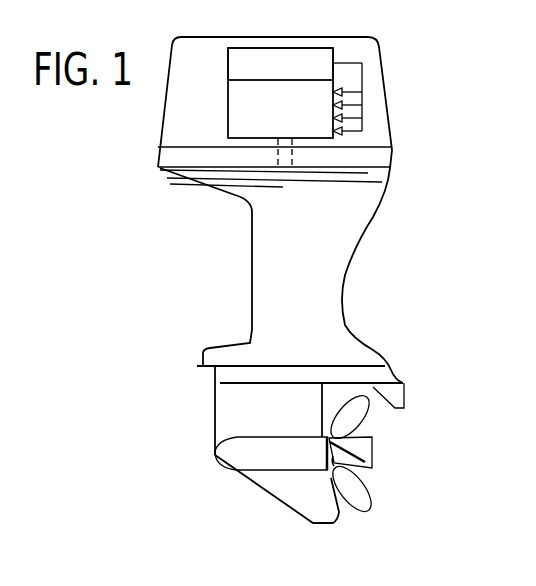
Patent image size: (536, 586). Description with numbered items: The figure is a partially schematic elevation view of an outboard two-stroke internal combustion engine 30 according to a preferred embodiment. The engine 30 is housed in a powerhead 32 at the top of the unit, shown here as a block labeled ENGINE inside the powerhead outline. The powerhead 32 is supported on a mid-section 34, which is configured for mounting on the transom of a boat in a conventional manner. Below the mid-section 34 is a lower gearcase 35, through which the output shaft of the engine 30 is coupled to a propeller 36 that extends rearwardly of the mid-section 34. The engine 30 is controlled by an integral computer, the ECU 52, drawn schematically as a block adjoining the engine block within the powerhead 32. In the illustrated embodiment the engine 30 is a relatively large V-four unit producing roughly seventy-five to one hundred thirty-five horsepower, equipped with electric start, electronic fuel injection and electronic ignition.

The engine 30 is at (228, 96).
The powerhead 32 is at (382, 65).
The mid-section 34 is at (332, 292).
The lower gearcase 35 is at (223, 452).
The propeller 36 is at (367, 448).
The integral computer (ECU) 52 is at (314, 58).